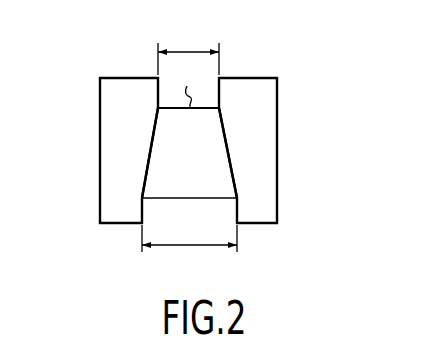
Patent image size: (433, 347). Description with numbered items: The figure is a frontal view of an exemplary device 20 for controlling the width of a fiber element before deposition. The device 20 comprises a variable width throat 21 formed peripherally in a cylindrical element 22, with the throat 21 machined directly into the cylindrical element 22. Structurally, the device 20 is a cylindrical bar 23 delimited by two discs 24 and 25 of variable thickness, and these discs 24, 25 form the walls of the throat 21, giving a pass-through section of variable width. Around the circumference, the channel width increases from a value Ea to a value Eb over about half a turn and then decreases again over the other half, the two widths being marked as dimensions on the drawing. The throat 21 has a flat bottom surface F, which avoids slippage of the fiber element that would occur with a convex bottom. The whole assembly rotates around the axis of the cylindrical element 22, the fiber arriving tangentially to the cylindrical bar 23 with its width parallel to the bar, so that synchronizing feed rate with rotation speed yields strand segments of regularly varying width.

The device 20 is at (211, 134).
The variable width throat 21 is at (228, 205).
The cylindrical element 22 is at (211, 171).
The cylindrical bar 23 is at (166, 161).
The disc 24 is at (112, 126).
The disc 25 is at (270, 126).